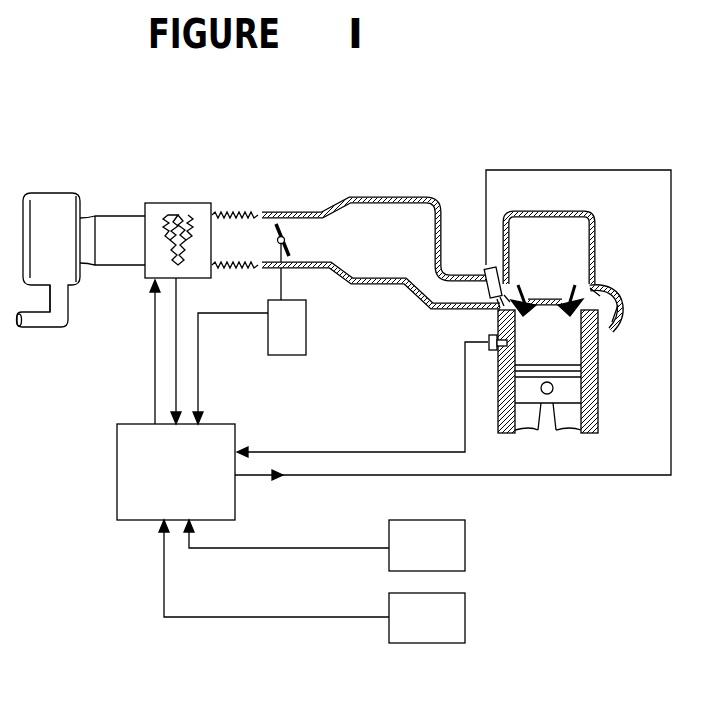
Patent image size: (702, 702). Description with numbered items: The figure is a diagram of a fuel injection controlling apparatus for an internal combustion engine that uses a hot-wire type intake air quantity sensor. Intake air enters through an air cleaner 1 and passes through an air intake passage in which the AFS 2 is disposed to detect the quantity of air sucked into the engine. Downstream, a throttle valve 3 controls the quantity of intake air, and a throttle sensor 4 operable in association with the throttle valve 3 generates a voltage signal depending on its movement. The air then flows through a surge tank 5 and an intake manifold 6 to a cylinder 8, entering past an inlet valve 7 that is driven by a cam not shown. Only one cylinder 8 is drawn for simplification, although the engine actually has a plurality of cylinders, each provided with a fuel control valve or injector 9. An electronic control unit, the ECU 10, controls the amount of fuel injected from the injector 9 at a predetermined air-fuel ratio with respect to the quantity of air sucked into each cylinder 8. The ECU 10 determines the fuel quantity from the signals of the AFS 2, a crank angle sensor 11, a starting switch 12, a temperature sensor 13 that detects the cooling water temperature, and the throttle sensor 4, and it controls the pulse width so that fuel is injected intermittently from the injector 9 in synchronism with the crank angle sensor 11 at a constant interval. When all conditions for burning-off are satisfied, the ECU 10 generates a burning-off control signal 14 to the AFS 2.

The air cleaner 1 is at (55, 207).
The AFS 2 is at (175, 203).
The throttle valve 3 is at (284, 232).
The throttle sensor 4 is at (306, 332).
The surge tank 5 is at (380, 217).
The intake manifold 6 is at (437, 291).
The inlet valve 7 is at (540, 283).
The cylinder 8 is at (560, 345).
The fuel control valve 9 is at (488, 270).
The electronic control unit 10 is at (117, 476).
The crank angle sensor 11 is at (467, 540).
The starting switch 12 is at (467, 617).
The temperature sensor 13 is at (488, 335).
The burning-off control signal 14 is at (155, 360).